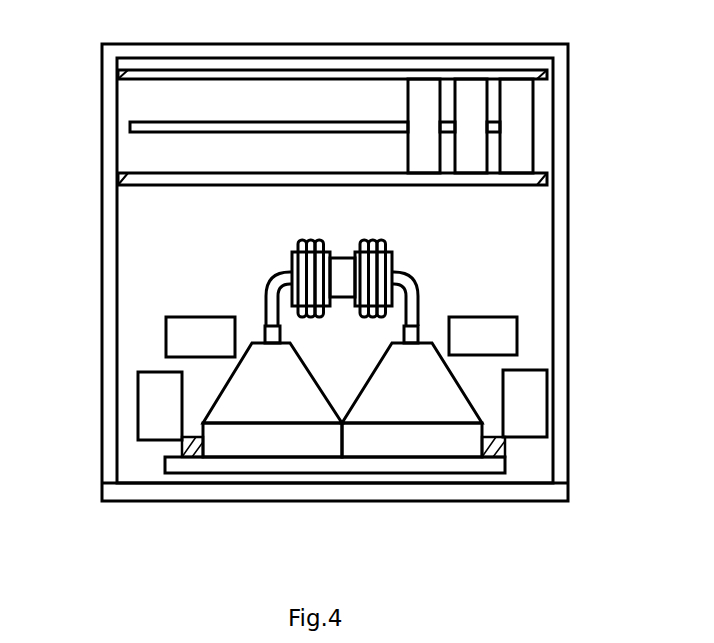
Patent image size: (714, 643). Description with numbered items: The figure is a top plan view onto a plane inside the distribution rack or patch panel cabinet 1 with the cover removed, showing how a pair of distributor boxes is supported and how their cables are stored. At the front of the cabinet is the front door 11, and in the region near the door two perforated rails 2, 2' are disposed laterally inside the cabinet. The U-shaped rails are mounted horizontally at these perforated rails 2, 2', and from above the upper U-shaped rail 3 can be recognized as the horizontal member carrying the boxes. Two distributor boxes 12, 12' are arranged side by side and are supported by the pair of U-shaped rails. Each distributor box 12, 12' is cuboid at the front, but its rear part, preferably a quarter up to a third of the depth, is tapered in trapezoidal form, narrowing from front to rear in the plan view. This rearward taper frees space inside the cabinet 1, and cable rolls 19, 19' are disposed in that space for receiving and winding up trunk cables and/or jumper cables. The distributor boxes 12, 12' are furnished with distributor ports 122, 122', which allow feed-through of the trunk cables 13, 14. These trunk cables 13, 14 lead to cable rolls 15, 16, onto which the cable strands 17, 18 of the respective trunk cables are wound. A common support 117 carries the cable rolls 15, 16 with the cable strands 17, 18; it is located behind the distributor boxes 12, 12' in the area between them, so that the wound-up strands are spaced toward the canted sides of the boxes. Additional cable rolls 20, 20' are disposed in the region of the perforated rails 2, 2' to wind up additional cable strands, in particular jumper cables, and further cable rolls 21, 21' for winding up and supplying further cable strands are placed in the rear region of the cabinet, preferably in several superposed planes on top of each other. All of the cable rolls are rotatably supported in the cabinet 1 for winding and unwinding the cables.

The distribution rack or patch panel cabinet 1 is at (576, 230).
The perforated rail 2 is at (567, 456).
The perforated rail 2' is at (116, 457).
The U-shaped rail 3 is at (485, 463).
The front door 11 is at (163, 495).
The distributor box 12 is at (419, 400).
The distributor box 12' is at (263, 400).
The trunk cable 13 is at (400, 278).
The trunk cable 14 is at (272, 305).
The cable roll 15 is at (388, 263).
The cable roll 16 is at (290, 263).
The cable strand 17 is at (378, 248).
The cable strand 18 is at (310, 238).
The cable roll 19 is at (558, 332).
The cable roll 19' is at (129, 337).
The cable roll 20 is at (585, 403).
The cable roll 20' is at (102, 406).
The cable roll 21 is at (582, 126).
The cable roll 21' is at (332, 127).
The common support 117 is at (342, 275).
The distributor port 122 is at (450, 309).
The distributor port 122' is at (324, 341).